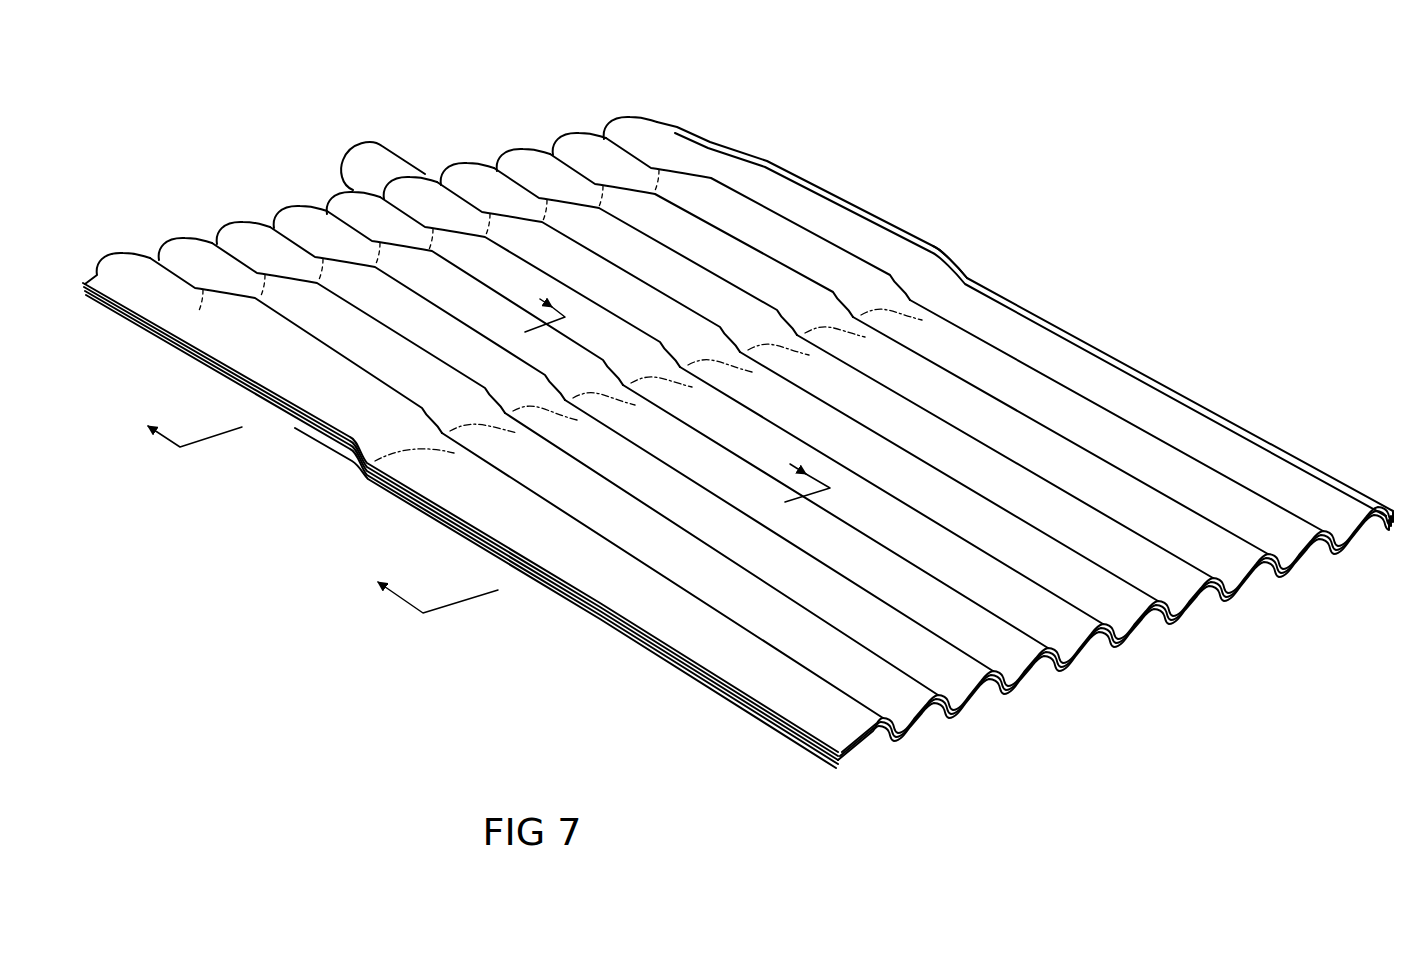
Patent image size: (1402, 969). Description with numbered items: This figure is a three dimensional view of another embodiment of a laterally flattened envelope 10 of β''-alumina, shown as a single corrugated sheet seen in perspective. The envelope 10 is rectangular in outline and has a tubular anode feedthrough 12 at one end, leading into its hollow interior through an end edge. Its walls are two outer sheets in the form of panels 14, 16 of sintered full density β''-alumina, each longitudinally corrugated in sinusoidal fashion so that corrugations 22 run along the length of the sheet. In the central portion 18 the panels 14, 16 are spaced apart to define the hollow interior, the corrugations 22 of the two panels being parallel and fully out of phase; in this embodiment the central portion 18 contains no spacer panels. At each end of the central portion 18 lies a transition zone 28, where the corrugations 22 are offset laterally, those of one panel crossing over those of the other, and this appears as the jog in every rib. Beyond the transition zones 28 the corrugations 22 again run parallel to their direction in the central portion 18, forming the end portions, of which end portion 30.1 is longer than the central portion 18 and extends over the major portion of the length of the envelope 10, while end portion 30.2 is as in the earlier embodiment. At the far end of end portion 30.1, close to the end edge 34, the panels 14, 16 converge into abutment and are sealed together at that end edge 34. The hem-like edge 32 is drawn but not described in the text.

The envelope 10 is at (1045, 124).
The tubular anode feedthrough 12 is at (422, 151).
The panel 14 is at (1313, 492).
The panel 16 is at (1291, 576).
The central portion 18 is at (908, 215).
The corrugations 22 is at (998, 436).
The transition zone 28 is at (740, 130).
The end portion 30.1 is at (1281, 405).
The end portion 30.2 is at (689, 116).
The hemmed edge 32 is at (614, 648).
The end edge 34 is at (215, 222).